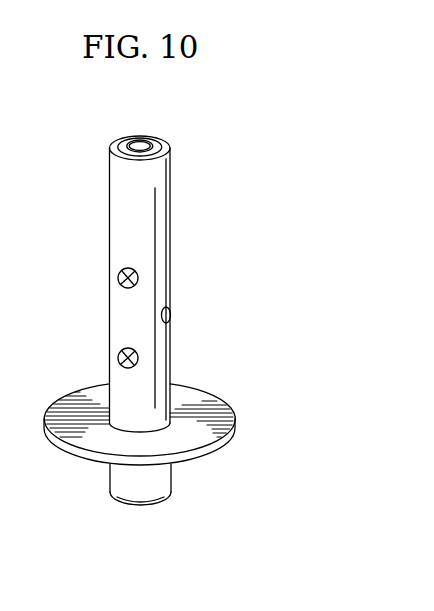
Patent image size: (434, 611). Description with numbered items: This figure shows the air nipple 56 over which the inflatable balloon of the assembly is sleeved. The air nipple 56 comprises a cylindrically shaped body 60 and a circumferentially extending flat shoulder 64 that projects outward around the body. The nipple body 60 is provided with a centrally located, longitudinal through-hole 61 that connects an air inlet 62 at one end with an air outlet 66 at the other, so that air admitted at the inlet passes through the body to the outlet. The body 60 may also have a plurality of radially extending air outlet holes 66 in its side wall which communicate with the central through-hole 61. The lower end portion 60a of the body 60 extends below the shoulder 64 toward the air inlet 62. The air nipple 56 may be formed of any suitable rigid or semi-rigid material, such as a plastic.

The air nipple 56 is at (72, 192).
The cylindrically shaped body 60 is at (170, 218).
The lower end portion of tubular body 60a is at (181, 470).
The longitudinal through-hole 61 is at (116, 126).
The air inlet 62 is at (126, 519).
The circumferentially extending flat shoulder 64 is at (236, 422).
The air outlet 66 is at (145, 144).